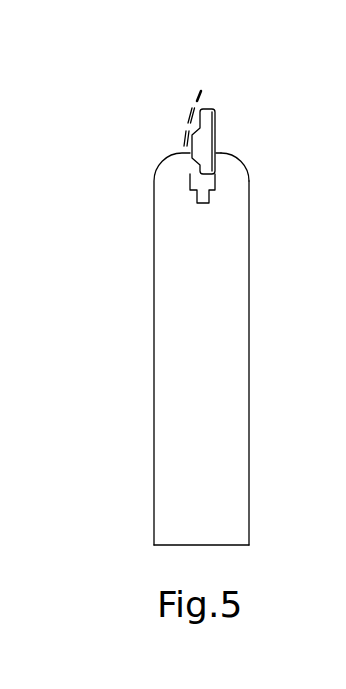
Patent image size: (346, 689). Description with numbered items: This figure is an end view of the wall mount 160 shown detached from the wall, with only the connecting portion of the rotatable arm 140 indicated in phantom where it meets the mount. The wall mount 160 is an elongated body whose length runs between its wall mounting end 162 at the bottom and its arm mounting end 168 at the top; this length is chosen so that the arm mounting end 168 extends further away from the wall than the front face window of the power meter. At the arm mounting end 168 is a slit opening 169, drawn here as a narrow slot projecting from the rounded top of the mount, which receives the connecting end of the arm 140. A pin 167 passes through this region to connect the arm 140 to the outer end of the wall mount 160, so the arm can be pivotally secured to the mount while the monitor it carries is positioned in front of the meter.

The rotatable arm 140 is at (178, 116).
The wall mount 160 is at (134, 438).
The wall mounting end 162 is at (190, 545).
The pin 167 is at (190, 182).
The arm mounting end 168 is at (243, 164).
The slit opening 169 is at (215, 153).